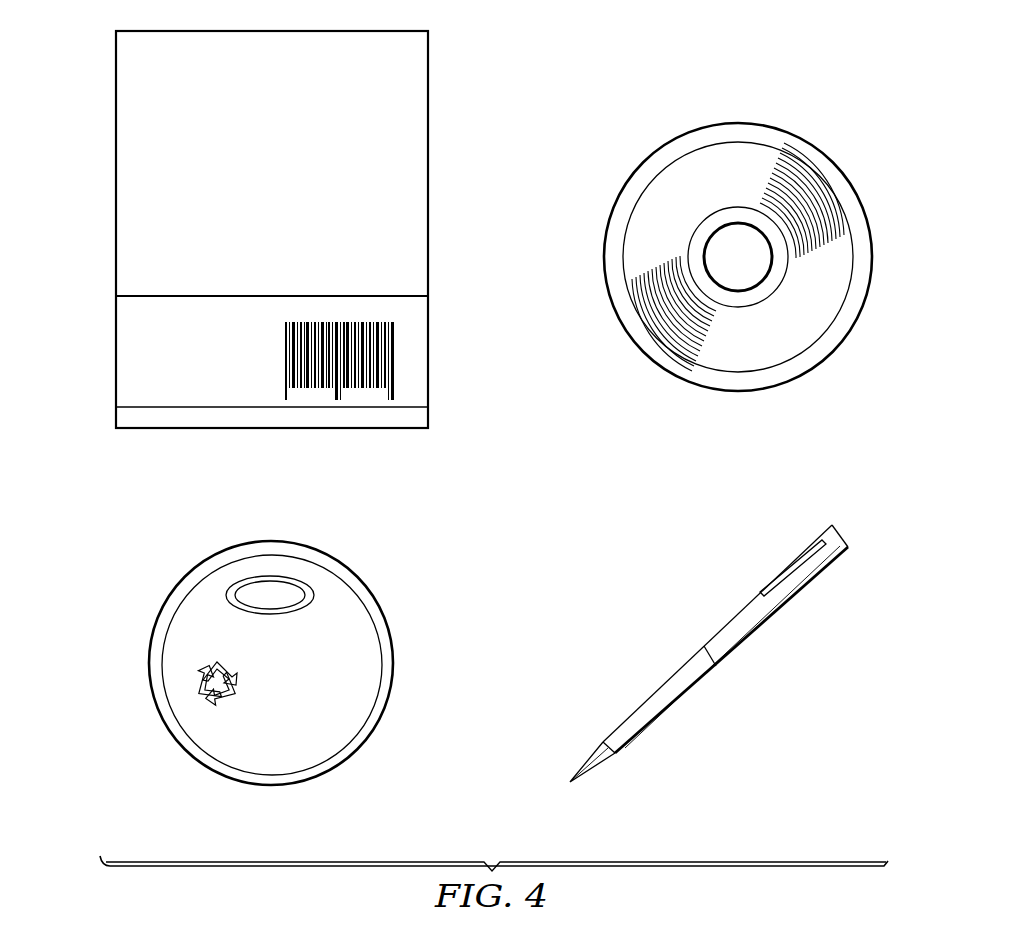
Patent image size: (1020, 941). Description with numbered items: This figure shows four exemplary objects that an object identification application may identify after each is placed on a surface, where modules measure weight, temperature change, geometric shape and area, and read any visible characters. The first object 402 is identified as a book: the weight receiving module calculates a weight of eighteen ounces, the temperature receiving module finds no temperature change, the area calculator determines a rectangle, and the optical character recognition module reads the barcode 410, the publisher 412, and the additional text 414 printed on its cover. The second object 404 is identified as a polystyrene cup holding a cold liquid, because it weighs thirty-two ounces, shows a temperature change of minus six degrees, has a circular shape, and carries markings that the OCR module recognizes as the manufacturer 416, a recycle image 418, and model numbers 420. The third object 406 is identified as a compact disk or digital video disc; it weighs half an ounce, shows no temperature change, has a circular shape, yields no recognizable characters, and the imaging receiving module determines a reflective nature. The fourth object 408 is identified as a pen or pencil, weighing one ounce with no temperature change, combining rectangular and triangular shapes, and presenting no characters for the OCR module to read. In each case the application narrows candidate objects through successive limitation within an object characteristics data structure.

The object 402 is at (234, 229).
The object 404 is at (259, 665).
The object 406 is at (776, 117).
The object 408 is at (715, 638).
The barcode 410 is at (329, 278).
The publisher 412 is at (172, 372).
The additional text 414 is at (200, 128).
The manufacturer 416 is at (268, 575).
The recycle image 418 is at (192, 682).
The model numbers 420 is at (345, 637).